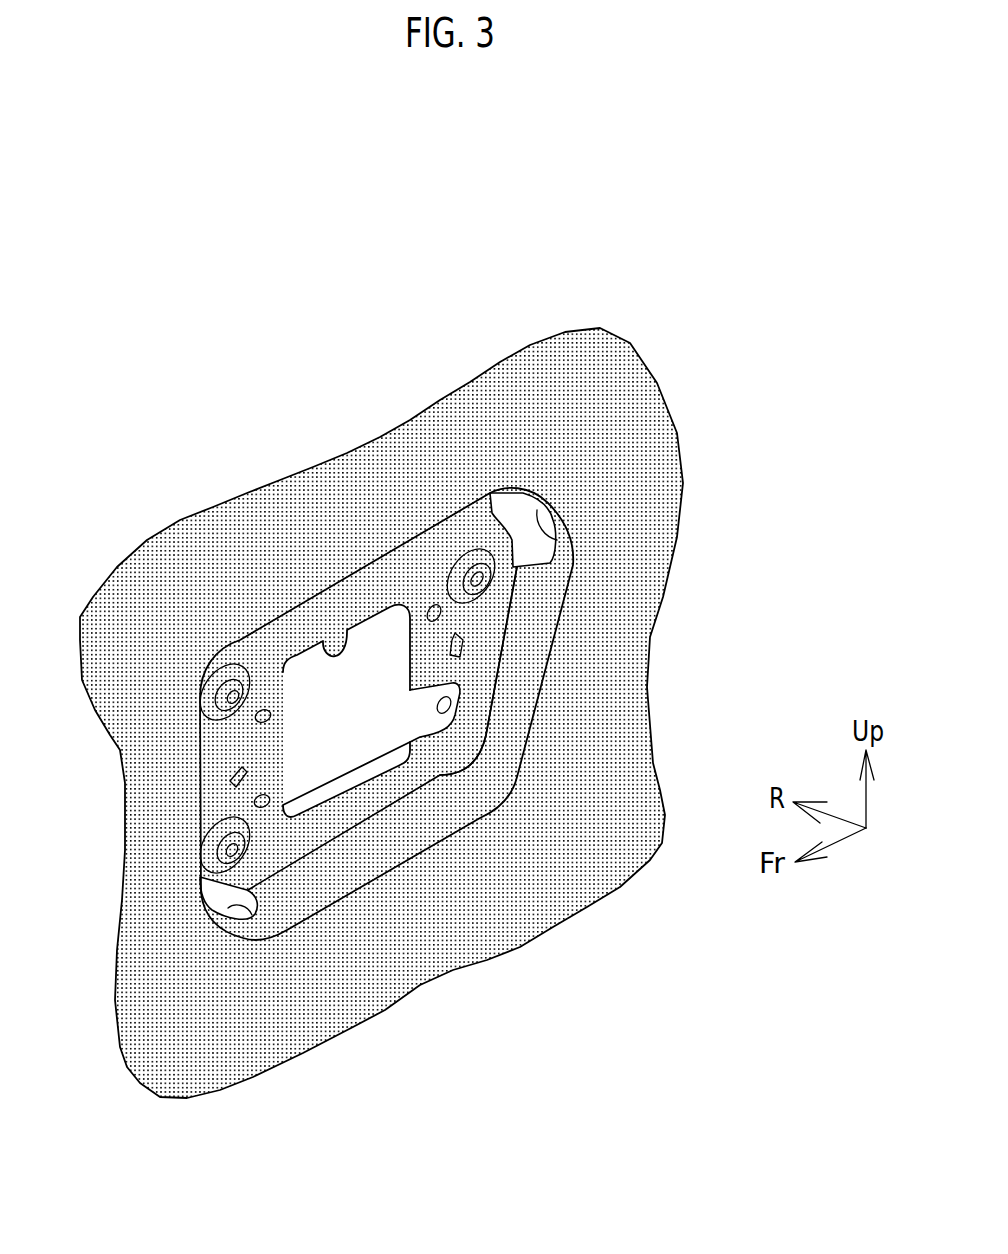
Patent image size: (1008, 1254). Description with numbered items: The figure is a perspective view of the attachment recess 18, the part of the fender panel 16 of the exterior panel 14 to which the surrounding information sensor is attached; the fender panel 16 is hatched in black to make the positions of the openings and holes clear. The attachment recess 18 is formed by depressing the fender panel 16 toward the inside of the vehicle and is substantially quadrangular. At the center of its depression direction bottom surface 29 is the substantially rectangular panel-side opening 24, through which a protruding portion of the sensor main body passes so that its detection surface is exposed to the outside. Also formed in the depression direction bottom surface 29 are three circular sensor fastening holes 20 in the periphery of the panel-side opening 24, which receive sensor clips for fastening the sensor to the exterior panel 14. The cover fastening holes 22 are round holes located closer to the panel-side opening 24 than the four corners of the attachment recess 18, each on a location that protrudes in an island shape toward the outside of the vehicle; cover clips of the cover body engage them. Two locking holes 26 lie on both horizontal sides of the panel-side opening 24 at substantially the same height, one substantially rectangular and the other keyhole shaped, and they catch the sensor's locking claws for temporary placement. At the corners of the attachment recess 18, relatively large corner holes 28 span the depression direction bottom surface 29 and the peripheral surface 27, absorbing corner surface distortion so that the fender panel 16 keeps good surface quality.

The exterior panel 14 is at (381, 657).
The fender panel 16 is at (573, 367).
The attachment recess 18 is at (455, 752).
The sensor fastening holes 20 is at (430, 617).
The cover fastening holes 22 is at (488, 555).
The panel-side opening 24 is at (340, 655).
The locking holes 26 is at (466, 642).
The peripheral surface 27 is at (528, 660).
The corner holes 28 is at (560, 540).
The depression direction bottom surface 29 is at (395, 790).